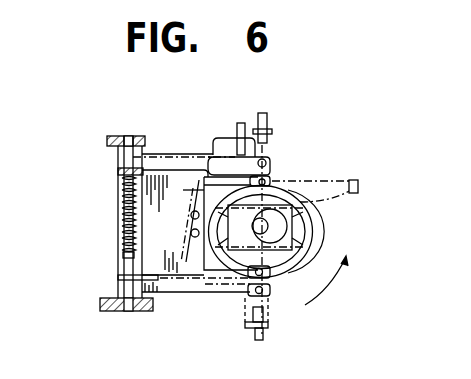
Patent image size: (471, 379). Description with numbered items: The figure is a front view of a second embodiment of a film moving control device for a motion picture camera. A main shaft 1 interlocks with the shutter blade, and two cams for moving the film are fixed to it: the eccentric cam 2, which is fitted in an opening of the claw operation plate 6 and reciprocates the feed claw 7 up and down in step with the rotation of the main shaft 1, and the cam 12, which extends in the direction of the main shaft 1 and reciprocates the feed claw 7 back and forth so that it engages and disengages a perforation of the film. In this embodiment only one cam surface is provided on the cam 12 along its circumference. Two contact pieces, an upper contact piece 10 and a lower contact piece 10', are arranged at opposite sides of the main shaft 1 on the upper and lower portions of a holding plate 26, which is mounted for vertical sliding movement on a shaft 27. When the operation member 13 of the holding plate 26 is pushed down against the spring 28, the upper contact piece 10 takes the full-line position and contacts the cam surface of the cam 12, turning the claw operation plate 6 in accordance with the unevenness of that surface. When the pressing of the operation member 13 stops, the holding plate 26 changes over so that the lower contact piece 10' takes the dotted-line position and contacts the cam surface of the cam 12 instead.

The main shaft 1 is at (255, 226).
The eccentric cam 2 is at (269, 242).
The claw operation plate 6 is at (307, 183).
The feed claw 7 is at (350, 184).
The upper contact piece 10 is at (256, 168).
The lower contact piece 10' is at (279, 242).
The cam 12 is at (306, 254).
The operation member 13 is at (236, 150).
The holding plate 26 is at (194, 288).
The shaft 27 is at (125, 263).
The spring 28 is at (127, 201).